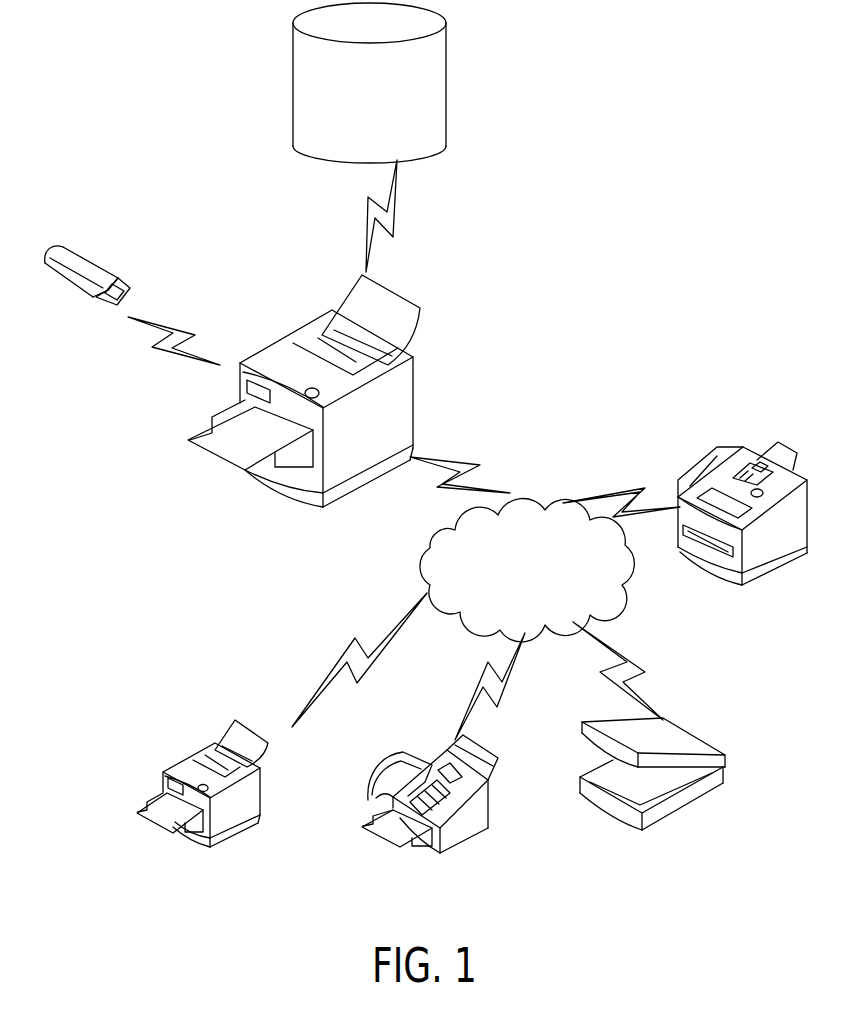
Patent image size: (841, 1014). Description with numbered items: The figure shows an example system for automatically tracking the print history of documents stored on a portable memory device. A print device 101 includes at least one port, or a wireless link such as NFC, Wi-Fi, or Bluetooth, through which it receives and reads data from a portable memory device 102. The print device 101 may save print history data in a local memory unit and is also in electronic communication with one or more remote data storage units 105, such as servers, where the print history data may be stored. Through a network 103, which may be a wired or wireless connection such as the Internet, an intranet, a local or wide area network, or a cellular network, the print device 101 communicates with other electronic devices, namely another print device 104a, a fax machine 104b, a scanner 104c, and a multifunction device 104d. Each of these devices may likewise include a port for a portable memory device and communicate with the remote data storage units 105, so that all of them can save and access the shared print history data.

The print device 101 is at (412, 357).
The portable memory device 102 is at (112, 270).
The network 103 is at (613, 587).
The another print device 104a is at (208, 850).
The fax machine 104b is at (438, 853).
The scanner 104c is at (678, 812).
The multifunction device 104d is at (737, 447).
The remote data storage unit 105 is at (433, 90).